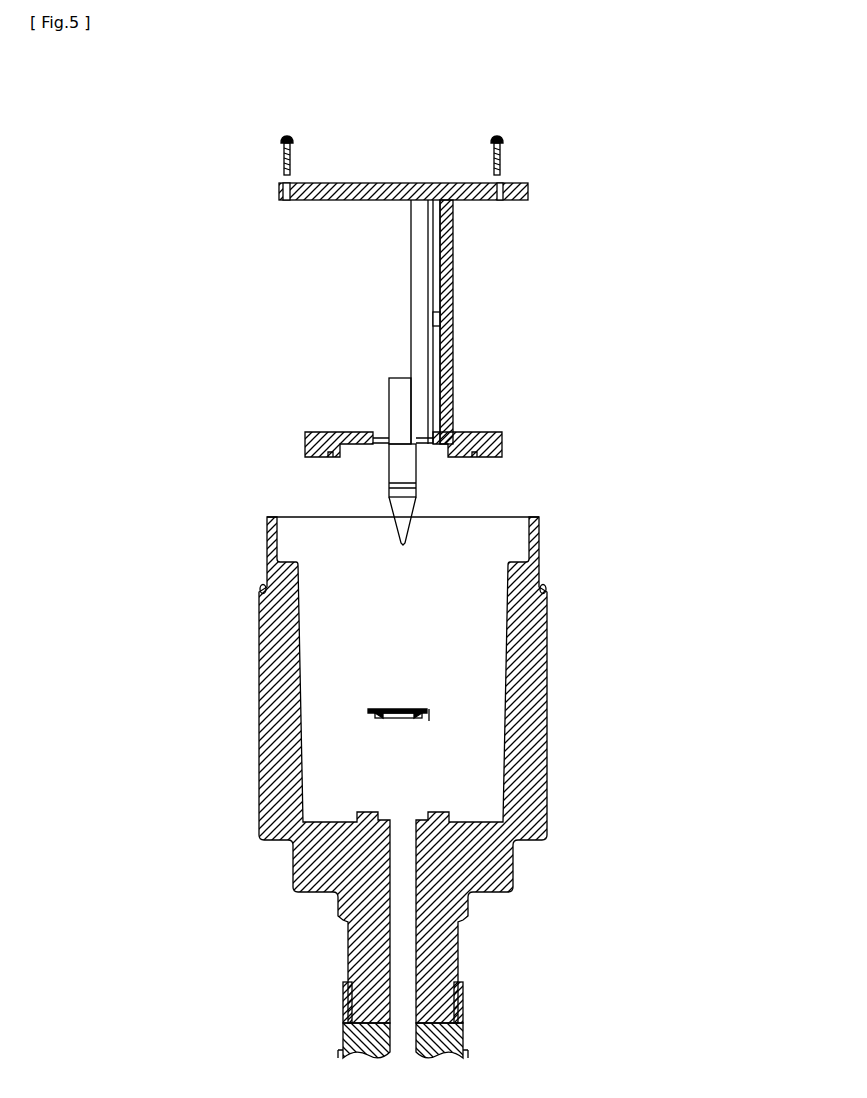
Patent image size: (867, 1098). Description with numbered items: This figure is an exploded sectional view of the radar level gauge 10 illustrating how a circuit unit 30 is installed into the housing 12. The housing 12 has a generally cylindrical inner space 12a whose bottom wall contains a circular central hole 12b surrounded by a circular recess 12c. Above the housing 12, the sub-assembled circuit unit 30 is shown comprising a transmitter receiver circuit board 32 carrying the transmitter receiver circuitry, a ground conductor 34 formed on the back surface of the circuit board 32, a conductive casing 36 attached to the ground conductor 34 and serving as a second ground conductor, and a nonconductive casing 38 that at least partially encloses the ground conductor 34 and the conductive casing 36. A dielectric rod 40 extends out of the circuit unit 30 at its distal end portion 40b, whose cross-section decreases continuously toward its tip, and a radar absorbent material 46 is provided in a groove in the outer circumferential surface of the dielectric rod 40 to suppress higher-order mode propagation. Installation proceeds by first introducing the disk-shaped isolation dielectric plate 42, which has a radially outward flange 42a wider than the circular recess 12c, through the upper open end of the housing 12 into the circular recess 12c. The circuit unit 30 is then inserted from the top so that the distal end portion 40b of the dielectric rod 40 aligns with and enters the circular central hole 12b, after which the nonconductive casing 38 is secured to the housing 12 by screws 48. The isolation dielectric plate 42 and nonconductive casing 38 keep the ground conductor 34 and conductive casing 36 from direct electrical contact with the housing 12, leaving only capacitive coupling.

The liquid ejection device 10 is at (718, 232).
The housing 12 is at (362, 787).
The generally cylindrical inner space 12a is at (362, 787).
The circular central hole 12b is at (392, 787).
The circular recess 12c is at (410, 814).
The circuit unit 30 is at (310, 333).
The transmitter receiver circuit board 32 is at (436, 310).
The ground conductor 34 is at (411, 292).
The conductive casing 36 is at (389, 385).
The nonconductive casing 38 is at (453, 370).
The dielectric rod 40 is at (414, 494).
The distal end portion 40b is at (411, 470).
The isolation dielectric plate 42 is at (384, 717).
The flange 42a is at (429, 720).
The radar absorbent material 46 is at (410, 490).
The screws 48 is at (292, 158).